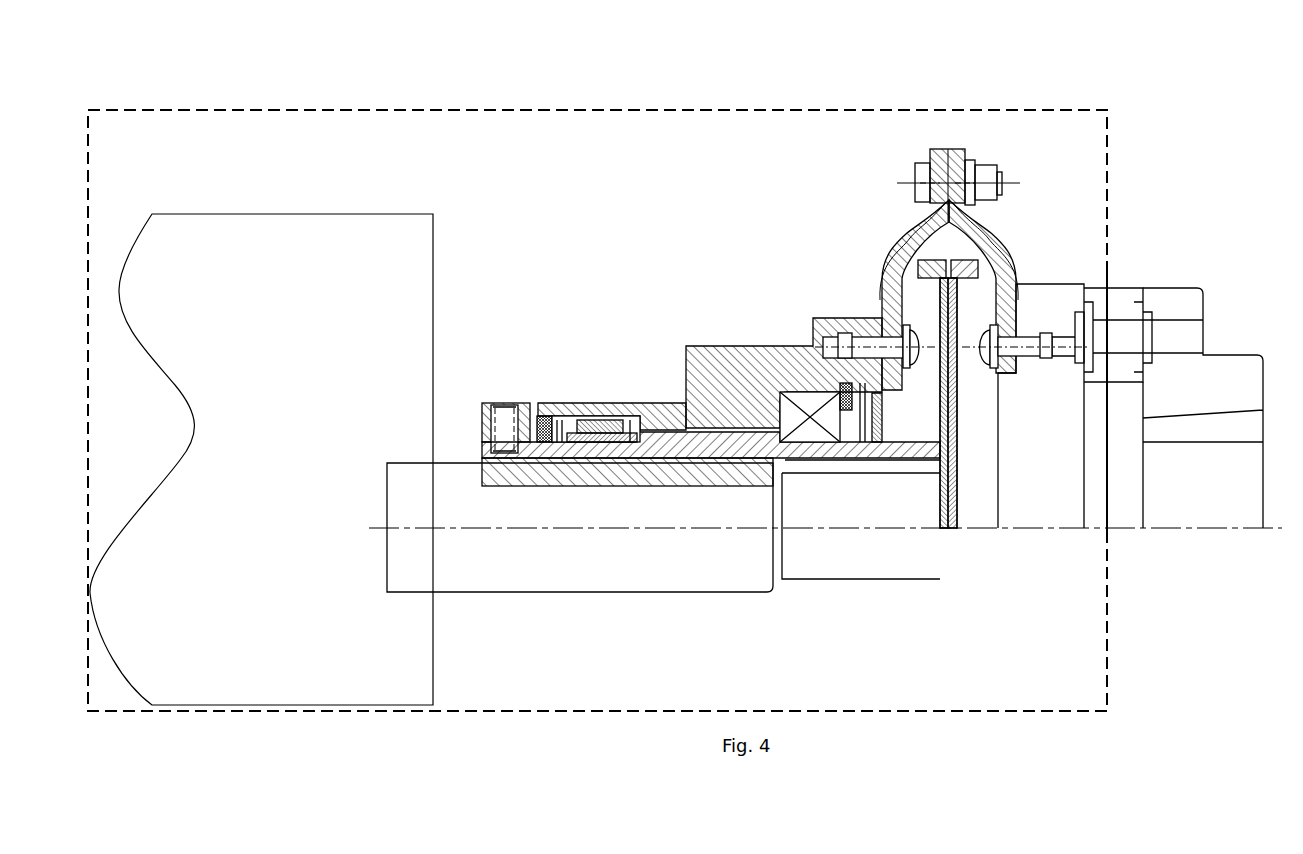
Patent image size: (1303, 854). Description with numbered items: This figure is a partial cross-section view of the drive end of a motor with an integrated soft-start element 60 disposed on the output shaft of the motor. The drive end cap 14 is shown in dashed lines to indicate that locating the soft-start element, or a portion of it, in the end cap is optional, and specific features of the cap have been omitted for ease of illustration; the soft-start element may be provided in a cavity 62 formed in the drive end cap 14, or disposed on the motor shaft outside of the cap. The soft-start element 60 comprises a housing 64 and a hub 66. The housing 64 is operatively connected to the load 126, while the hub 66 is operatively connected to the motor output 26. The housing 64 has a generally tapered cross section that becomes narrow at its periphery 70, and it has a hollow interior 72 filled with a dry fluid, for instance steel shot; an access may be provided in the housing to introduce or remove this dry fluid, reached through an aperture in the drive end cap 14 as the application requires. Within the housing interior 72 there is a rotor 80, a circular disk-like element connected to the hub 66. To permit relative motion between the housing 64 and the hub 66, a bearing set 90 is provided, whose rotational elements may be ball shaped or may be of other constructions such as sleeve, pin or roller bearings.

The drive end cap 14 is at (355, 110).
The motor output 26 is at (678, 562).
The soft-start element 60 is at (972, 108).
The cavity 62 is at (392, 142).
The housing 64 is at (1005, 236).
The hub 66 is at (767, 445).
The periphery 70 is at (920, 253).
The hollow interior 72 is at (923, 220).
The rotor 80 is at (955, 470).
The bearing set 90 is at (600, 433).
The load 126 is at (1058, 470).